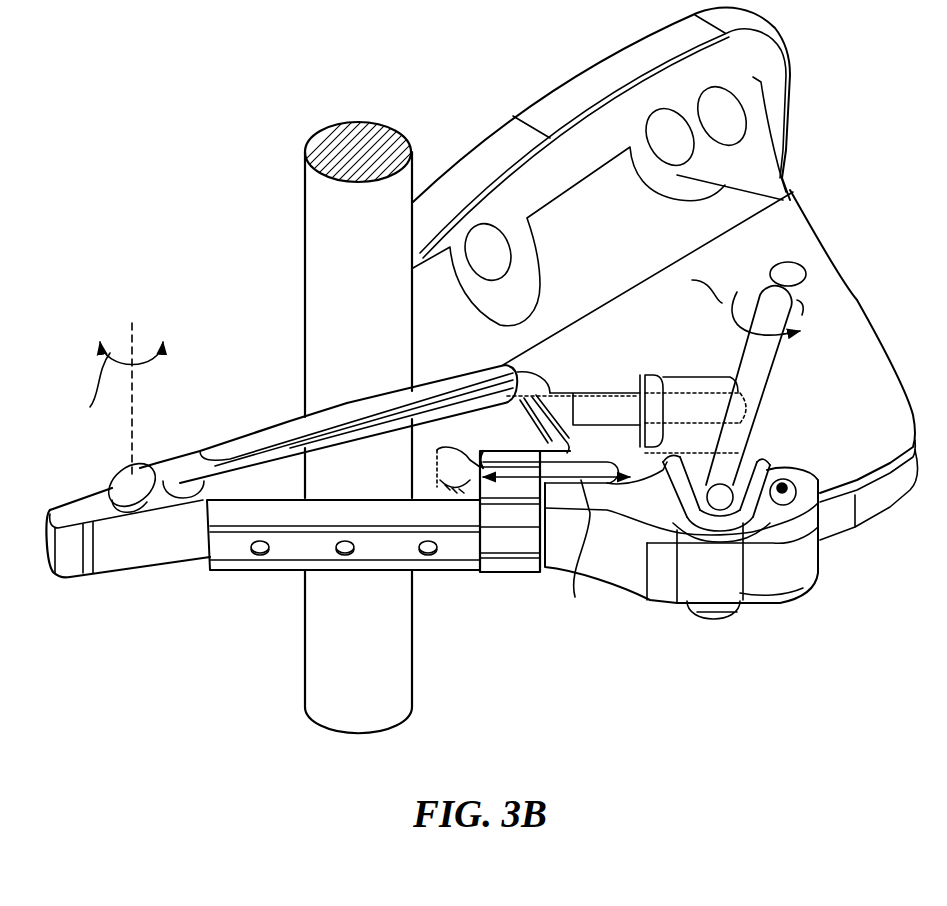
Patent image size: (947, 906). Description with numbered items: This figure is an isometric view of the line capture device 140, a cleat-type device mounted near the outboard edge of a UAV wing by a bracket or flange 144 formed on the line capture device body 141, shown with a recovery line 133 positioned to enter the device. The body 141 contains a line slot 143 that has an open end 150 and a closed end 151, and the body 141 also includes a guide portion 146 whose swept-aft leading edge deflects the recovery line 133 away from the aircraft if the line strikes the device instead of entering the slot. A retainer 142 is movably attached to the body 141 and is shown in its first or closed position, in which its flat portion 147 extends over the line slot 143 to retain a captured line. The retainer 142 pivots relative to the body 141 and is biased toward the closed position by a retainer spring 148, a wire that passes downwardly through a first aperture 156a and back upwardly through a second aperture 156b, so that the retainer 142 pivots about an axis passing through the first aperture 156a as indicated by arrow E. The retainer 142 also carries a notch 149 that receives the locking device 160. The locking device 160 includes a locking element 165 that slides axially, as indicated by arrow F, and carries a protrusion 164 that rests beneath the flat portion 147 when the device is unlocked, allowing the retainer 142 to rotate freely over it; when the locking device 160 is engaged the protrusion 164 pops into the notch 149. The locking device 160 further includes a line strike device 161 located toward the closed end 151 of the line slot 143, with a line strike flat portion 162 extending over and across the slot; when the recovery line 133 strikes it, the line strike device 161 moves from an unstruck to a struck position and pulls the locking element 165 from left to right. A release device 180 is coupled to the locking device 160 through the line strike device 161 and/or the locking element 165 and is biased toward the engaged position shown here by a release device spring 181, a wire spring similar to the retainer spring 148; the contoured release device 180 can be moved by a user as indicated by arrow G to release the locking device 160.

The recovery line 133 is at (363, 123).
The line capture device 140 is at (728, 652).
The line capture device body 141 is at (843, 313).
The retainer 142 is at (267, 568).
The line slot 143 is at (613, 420).
The bracket or flange 144 is at (776, 67).
The guide portion 146 is at (68, 513).
The flat portion 147 is at (283, 477).
The retainer spring 148 is at (163, 470).
The notch 149 is at (525, 468).
The open end 150 is at (257, 283).
The closed end 151 is at (743, 403).
The first aperture 156a is at (147, 517).
The second aperture 156b is at (192, 505).
The locking device 160 is at (510, 490).
The line strike device 161 is at (690, 383).
The line strike flat portion 162 is at (703, 443).
The protrusion 164 is at (447, 466).
The locking element 165 is at (527, 492).
The release device 180 is at (663, 582).
The release device spring 181 is at (758, 361).